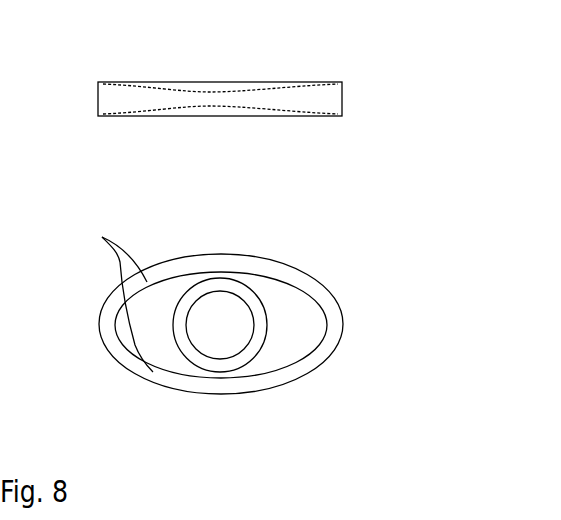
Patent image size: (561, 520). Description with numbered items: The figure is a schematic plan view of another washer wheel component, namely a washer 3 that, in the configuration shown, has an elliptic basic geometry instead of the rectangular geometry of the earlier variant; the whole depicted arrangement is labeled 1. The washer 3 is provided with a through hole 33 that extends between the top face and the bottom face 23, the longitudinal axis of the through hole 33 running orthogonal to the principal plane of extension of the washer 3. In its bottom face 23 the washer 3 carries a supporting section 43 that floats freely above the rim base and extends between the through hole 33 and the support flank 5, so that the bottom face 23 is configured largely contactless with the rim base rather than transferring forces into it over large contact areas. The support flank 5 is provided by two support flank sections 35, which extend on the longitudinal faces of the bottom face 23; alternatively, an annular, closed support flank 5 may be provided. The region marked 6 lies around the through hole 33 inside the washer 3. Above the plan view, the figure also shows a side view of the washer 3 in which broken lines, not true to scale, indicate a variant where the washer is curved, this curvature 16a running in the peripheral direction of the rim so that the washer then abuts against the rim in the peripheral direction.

The device assembly 1 is at (59, 280).
The washer 3 is at (100, 313).
The support flank 5 is at (112, 292).
The central ring element 6 is at (200, 293).
The curvature 16a is at (260, 90).
The bottom face 23 is at (301, 306).
The through hole 33 is at (230, 310).
The support flank sections 35 is at (116, 293).
The supporting section 43 is at (115, 332).